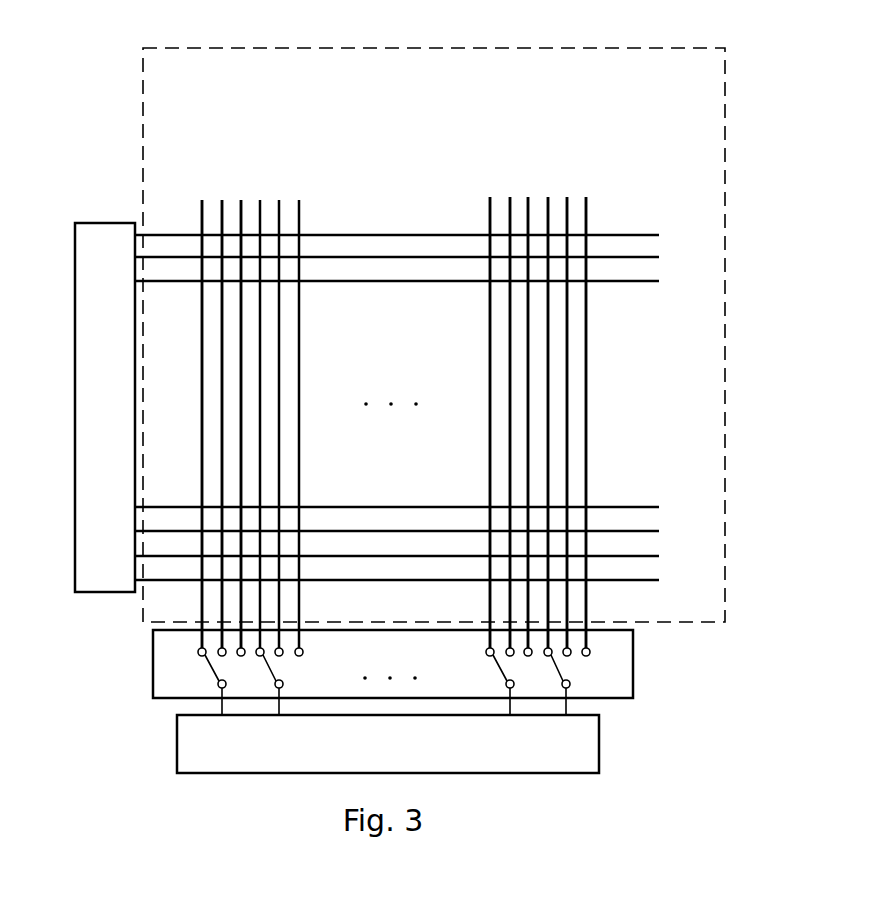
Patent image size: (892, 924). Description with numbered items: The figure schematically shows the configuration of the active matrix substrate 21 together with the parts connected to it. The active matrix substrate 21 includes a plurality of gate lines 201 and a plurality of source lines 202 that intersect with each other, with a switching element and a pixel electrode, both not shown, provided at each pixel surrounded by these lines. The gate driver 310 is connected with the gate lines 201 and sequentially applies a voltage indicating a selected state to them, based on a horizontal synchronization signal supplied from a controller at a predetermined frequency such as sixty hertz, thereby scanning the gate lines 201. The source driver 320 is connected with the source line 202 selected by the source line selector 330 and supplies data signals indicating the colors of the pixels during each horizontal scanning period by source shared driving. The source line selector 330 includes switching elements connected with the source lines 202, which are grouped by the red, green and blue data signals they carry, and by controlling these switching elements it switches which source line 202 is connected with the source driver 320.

The active matrix substrate 21 is at (729, 47).
The gate line 201 is at (657, 234).
The source line 202 is at (612, 110).
The gate driver 310 is at (75, 223).
The source driver 320 is at (599, 752).
The source line selector 330 is at (633, 665).